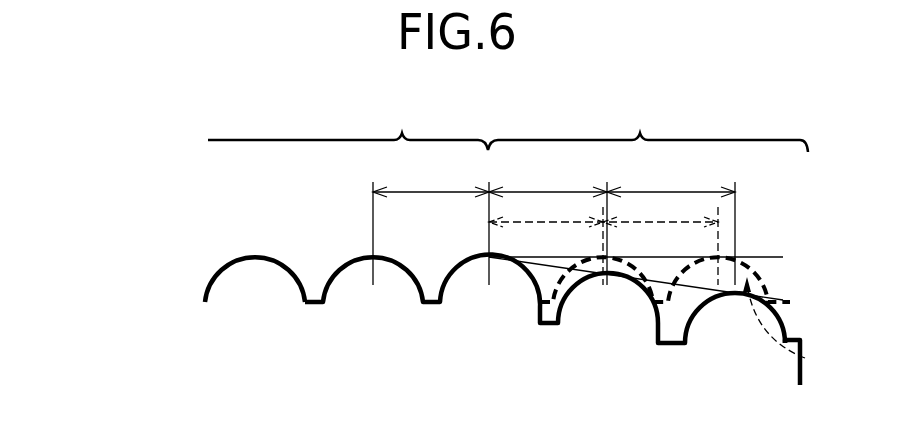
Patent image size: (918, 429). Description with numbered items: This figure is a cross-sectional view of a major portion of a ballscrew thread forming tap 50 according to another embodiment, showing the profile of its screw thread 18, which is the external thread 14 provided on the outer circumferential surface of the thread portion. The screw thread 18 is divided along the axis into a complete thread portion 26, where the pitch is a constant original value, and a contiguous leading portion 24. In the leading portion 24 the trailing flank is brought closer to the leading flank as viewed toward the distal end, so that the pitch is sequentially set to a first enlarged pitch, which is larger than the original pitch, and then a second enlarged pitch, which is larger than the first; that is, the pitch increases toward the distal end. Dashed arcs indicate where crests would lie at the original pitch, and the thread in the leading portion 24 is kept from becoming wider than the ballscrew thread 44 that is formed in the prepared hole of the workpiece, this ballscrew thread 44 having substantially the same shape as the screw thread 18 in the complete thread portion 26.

The external thread 14 is at (192, 219).
The screw thread 18 is at (228, 272).
The leading portion 24 is at (653, 130).
The complete thread portion 26 is at (353, 129).
The ballscrew thread 44 is at (806, 357).
The thread forming tap 50 is at (132, 124).